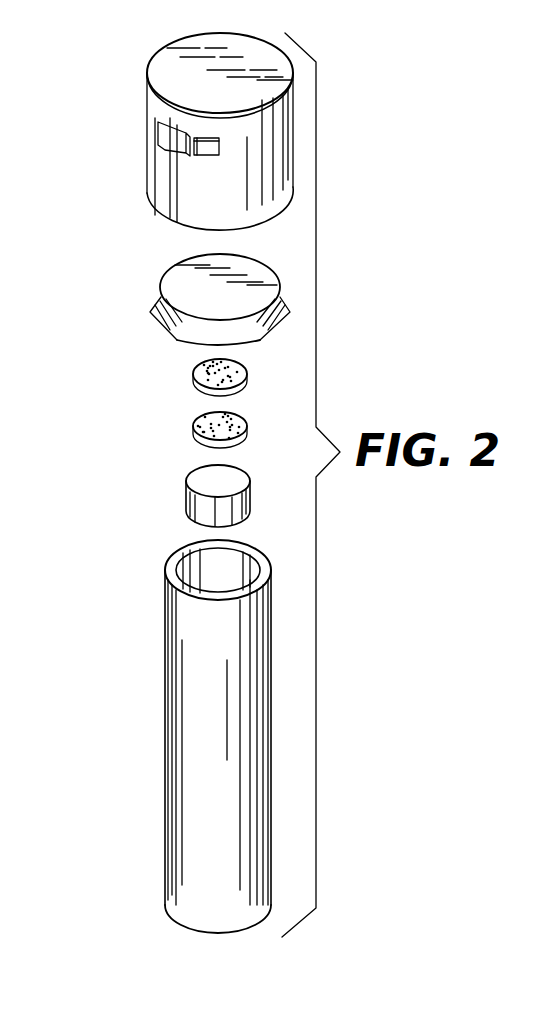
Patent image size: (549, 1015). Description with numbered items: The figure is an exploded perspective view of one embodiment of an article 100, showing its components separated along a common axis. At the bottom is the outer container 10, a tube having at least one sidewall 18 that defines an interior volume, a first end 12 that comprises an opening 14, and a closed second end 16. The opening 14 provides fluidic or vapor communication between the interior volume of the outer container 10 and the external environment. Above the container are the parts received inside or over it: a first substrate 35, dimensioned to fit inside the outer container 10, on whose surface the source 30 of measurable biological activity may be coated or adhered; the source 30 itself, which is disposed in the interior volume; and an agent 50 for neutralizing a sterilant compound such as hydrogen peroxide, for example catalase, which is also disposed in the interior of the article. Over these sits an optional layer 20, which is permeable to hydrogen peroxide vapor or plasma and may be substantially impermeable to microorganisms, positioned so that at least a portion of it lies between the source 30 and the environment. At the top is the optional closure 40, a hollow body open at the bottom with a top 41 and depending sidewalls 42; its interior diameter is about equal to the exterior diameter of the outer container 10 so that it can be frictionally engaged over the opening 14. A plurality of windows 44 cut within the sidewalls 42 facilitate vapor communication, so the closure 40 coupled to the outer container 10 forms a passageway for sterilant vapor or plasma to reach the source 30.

The article 100 is at (126, 880).
The outer container 10 is at (188, 747).
The first end 12 is at (217, 602).
The opening 14 is at (222, 588).
The second end 16 is at (192, 932).
The sidewall 18 is at (209, 561).
The layer 20 is at (182, 277).
The source of measurable biological activity 30 is at (193, 426).
The first substrate 35 is at (187, 497).
The closure 40 is at (185, 125).
The top 41 is at (208, 37).
The depending sidewalls 42 is at (180, 212).
The windows 44 is at (202, 157).
The agent for neutralizing a sterilant compound 50 is at (193, 373).